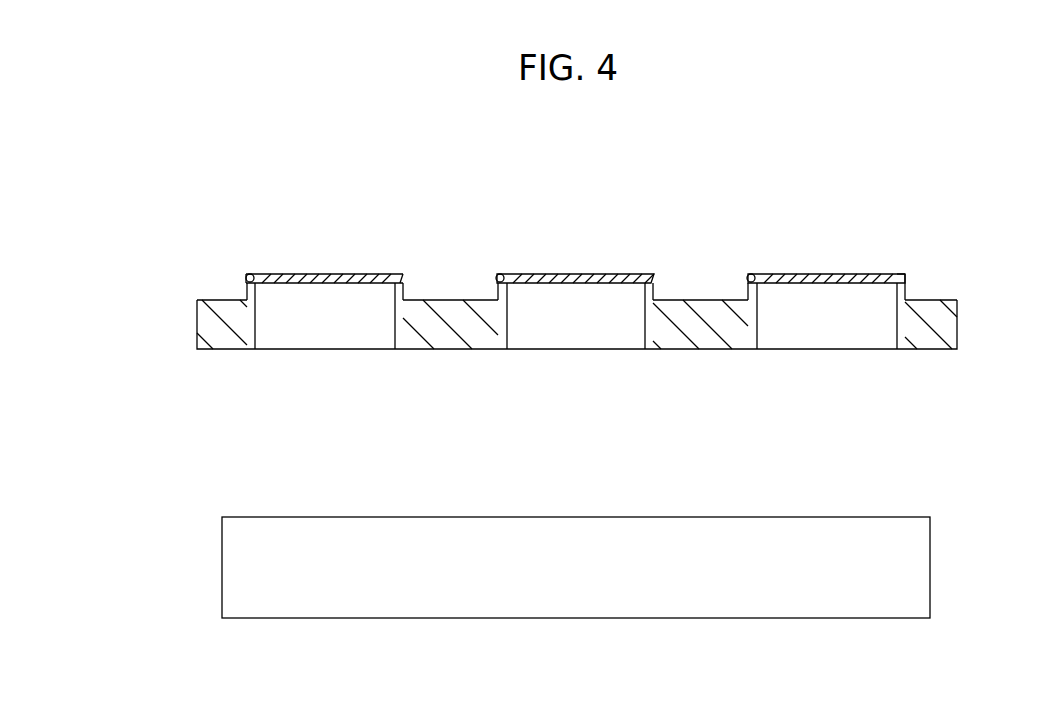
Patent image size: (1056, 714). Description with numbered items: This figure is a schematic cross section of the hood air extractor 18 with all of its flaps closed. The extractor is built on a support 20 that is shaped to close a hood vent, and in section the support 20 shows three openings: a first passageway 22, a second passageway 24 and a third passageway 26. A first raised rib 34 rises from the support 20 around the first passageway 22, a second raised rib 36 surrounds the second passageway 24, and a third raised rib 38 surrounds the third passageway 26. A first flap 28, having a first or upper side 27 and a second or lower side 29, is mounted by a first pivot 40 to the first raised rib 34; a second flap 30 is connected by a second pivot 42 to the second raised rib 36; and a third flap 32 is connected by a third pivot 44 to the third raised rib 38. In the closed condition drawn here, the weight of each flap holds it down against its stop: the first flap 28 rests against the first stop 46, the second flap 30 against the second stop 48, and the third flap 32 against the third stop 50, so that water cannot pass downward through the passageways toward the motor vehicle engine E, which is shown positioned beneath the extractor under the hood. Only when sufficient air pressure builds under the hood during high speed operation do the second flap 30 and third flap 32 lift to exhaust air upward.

The hood air extractor 18 is at (800, 165).
The support 20 is at (208, 320).
The first passageway 22 is at (297, 330).
The second passageway 24 is at (580, 327).
The third passageway 26 is at (837, 320).
The first or upper side 27 is at (372, 277).
The first flap 28 is at (322, 277).
The second or lower side 29 is at (343, 285).
The second flap 30 is at (572, 277).
The third flap 32 is at (836, 277).
The first raised rib 34 is at (247, 290).
The second raised rib 36 is at (496, 290).
The third raised rib 38 is at (906, 299).
The first pivot 40 is at (249, 276).
The second pivot 42 is at (500, 275).
The third pivot 44 is at (750, 275).
The first stop 46 is at (400, 276).
The second stop 48 is at (652, 274).
The third stop 50 is at (903, 275).
The motor vehicle engine E is at (393, 593).